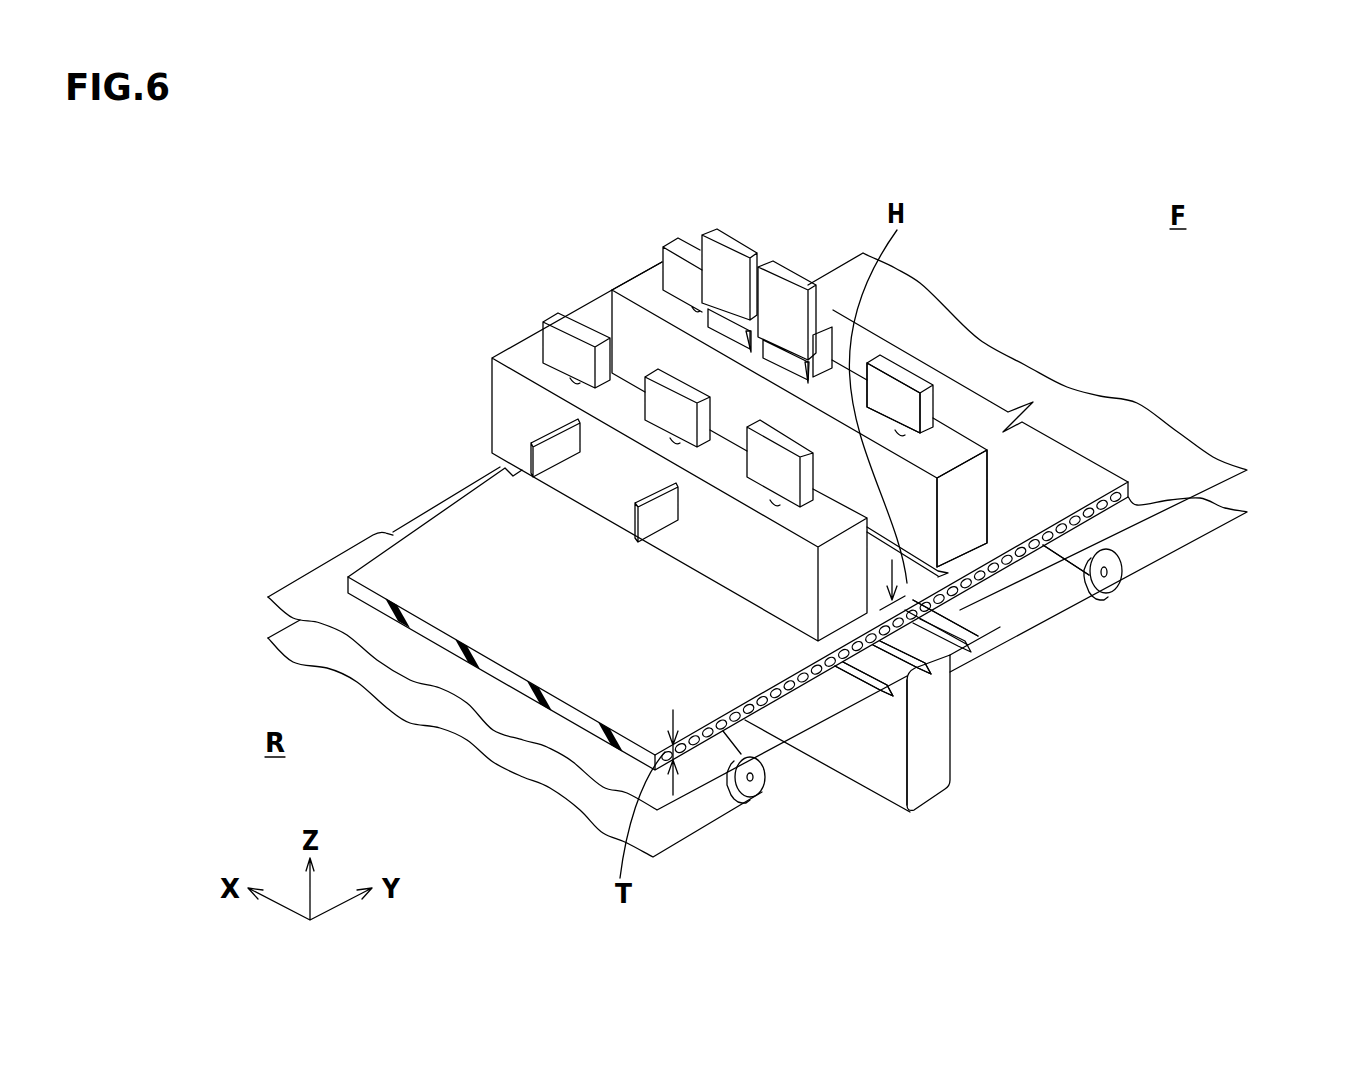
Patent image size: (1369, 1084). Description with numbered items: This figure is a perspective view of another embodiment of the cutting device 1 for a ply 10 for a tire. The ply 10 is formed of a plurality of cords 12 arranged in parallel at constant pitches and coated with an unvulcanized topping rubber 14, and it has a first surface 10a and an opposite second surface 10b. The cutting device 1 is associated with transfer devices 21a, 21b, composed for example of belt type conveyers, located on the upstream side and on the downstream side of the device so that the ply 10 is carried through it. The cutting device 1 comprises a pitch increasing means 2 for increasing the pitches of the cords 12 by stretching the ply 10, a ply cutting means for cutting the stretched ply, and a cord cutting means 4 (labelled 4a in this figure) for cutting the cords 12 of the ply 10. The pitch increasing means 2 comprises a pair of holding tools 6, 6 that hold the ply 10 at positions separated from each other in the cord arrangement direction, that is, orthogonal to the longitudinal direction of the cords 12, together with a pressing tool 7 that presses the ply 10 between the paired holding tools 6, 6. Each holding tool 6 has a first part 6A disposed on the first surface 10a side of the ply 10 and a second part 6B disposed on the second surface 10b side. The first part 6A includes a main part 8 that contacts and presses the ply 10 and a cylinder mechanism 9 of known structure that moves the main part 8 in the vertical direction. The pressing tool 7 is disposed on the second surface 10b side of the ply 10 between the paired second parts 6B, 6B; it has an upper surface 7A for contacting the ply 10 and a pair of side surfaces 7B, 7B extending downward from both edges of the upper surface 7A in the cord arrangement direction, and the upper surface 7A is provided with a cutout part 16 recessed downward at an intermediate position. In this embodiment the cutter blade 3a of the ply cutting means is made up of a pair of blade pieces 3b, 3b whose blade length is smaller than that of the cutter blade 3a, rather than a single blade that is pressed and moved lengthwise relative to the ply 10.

The cutting device 1 is at (721, 154).
The pitch increasing means 2 is at (1166, 845).
The cutter blade 3a is at (785, 255).
The blade piece 3b is at (868, 170).
The cord cutting means 4 is at (518, 647).
The sensor 4a is at (558, 452).
The holding tool 6 is at (567, 273).
The first part 6A is at (992, 412).
The second part 6B is at (1027, 613).
The pressing tool 7 is at (894, 787).
The upper surface 7A is at (993, 617).
The side surface 7B is at (952, 750).
The main part 8 is at (967, 503).
The cylinder mechanism 9 is at (927, 410).
The ply 10 is at (834, 540).
The first surface 10a is at (1075, 483).
The second surface 10b is at (1033, 573).
The cord 12 is at (763, 782).
The topping rubber 14 is at (840, 664).
The cutout part 16 is at (952, 725).
The transfer device 21a is at (1187, 527).
The transfer device 21b is at (676, 803).